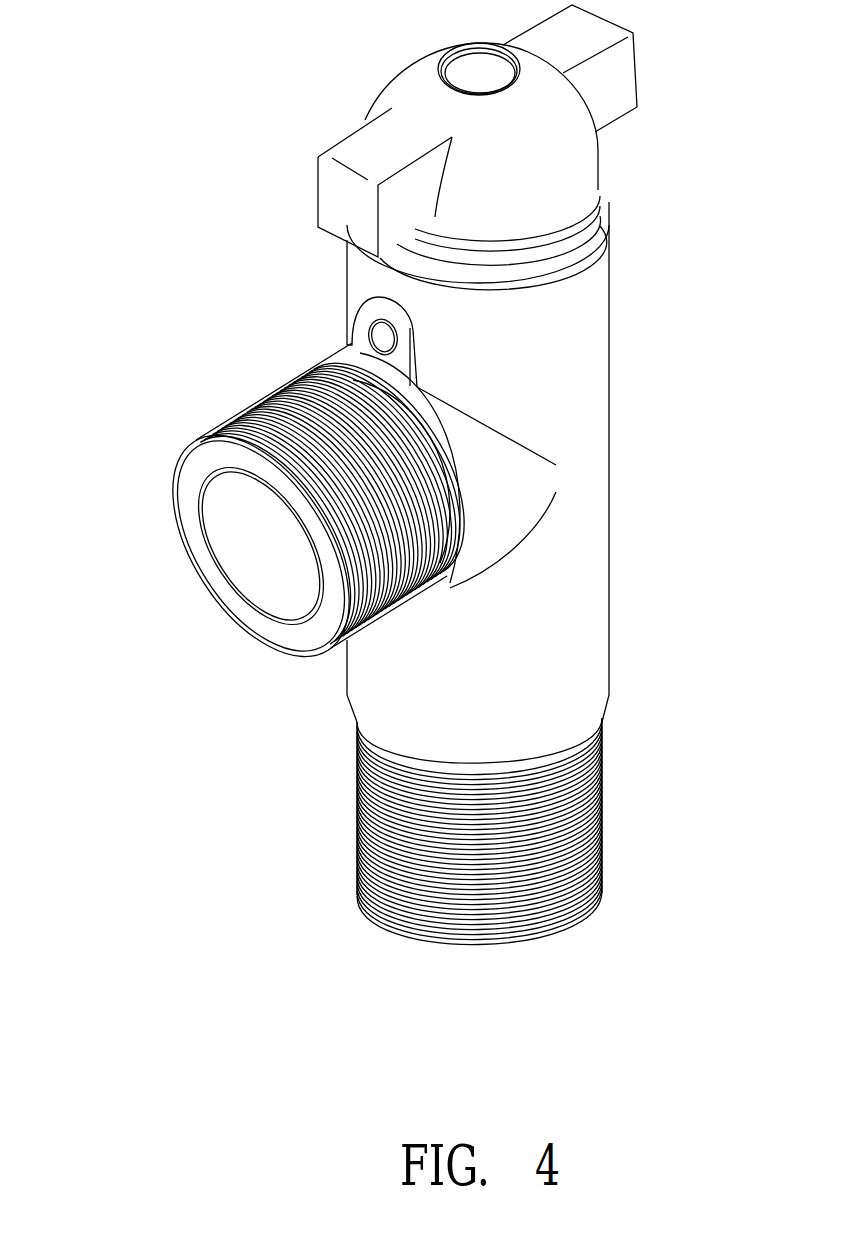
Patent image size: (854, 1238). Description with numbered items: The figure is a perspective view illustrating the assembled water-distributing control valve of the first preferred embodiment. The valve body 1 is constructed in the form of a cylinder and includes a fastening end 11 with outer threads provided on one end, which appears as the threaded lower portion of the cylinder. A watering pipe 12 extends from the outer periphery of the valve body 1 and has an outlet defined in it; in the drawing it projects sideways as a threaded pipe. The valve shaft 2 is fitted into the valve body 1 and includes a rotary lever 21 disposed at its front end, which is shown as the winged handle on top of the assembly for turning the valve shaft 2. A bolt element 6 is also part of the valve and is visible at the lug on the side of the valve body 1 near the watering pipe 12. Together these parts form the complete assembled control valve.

The valve body 1 is at (608, 620).
The fastening end 11 is at (602, 865).
The watering pipe 12 is at (190, 574).
The valve shaft 2 is at (600, 194).
The rotary lever 21 is at (627, 63).
The bolt element 6 is at (368, 328).